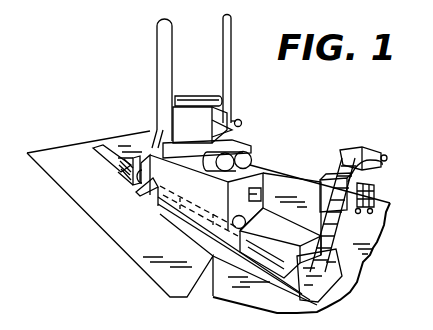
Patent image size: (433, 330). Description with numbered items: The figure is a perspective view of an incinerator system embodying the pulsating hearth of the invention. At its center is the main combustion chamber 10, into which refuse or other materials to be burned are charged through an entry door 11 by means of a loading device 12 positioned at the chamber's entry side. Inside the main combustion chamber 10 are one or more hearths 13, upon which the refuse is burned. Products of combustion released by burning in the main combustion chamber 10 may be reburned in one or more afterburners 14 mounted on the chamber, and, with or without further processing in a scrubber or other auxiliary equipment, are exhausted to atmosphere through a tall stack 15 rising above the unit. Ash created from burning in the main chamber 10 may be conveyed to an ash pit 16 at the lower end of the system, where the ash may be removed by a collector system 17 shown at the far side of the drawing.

The main combustion chamber 10 is at (160, 181).
The entry door 11 is at (125, 175).
The loading device 12 is at (93, 148).
The hearth 13 is at (176, 232).
The afterburner 14 is at (250, 153).
The stack 15 is at (157, 46).
The ash pit 16 is at (316, 278).
The collector system 17 is at (378, 238).